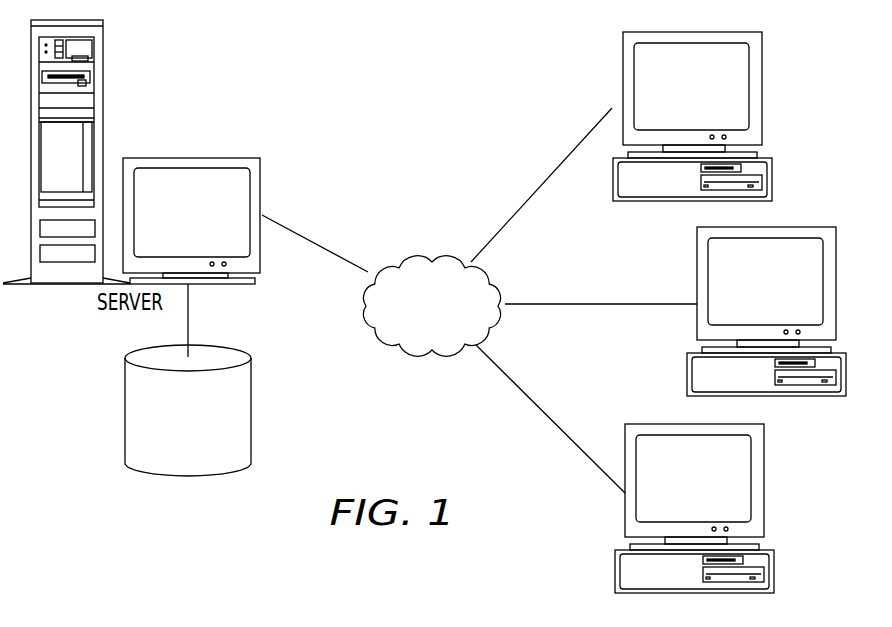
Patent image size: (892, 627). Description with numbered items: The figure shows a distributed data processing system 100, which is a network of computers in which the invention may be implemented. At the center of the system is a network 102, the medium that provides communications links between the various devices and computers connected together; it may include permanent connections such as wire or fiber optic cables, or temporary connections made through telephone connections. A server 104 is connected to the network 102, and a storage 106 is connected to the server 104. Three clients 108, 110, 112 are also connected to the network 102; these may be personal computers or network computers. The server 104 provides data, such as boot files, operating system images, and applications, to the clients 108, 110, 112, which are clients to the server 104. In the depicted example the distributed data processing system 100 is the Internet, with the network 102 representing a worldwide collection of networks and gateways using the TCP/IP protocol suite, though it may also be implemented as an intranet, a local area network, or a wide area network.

The distributed data processing system 100 is at (207, 521).
The network 102 is at (453, 317).
The server 104 is at (213, 226).
The storage 106 is at (209, 431).
The client 108 is at (672, 100).
The client 110 is at (746, 295).
The client 112 is at (674, 493).